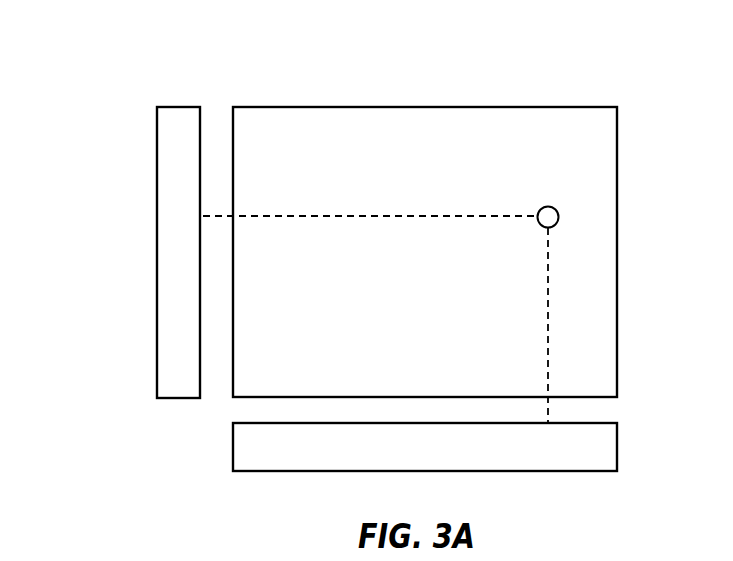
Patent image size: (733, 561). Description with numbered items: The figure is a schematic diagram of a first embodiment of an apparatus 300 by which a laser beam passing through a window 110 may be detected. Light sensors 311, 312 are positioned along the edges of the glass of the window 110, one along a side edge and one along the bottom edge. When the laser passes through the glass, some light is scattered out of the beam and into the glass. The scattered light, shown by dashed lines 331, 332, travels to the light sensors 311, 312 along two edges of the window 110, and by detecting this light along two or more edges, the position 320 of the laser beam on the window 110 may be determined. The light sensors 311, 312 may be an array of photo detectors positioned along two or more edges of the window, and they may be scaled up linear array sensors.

The apparatus 300 is at (103, 107).
The window 110 is at (492, 138).
The light sensor 311 is at (197, 215).
The light sensor 312 is at (493, 456).
The position of the laser beam 320 is at (558, 218).
The dashed line 331 is at (273, 216).
The dashed line 332 is at (548, 320).